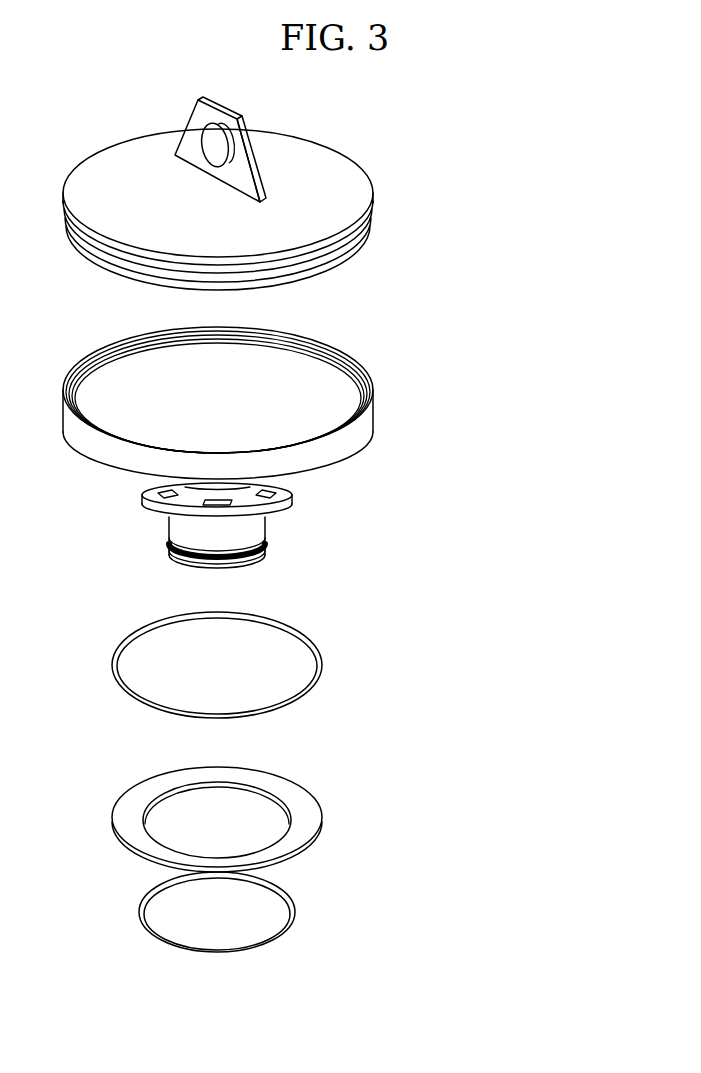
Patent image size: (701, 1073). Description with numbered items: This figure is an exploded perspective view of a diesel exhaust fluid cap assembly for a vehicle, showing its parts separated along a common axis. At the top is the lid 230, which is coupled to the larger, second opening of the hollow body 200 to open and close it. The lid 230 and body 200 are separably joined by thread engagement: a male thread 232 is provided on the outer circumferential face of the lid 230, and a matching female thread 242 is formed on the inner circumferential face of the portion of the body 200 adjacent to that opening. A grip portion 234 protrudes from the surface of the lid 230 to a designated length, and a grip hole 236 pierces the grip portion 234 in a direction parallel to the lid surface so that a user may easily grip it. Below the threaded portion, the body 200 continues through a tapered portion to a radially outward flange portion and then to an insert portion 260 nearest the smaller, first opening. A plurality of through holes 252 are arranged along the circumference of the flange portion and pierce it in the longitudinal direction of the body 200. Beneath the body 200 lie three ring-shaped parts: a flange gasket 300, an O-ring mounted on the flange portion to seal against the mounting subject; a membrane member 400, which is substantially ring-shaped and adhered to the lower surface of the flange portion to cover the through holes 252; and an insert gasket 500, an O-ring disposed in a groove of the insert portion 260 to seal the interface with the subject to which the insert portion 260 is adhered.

The body 200 is at (535, 97).
The lid 230 is at (294, 190).
The male thread 232 is at (361, 256).
The grip portion 234 is at (167, 146).
The grip hole 236 is at (208, 142).
The female thread 242 is at (345, 350).
The through holes 252 is at (147, 491).
The insert portion 260 is at (251, 525).
The flange gasket 300 is at (355, 643).
The membrane member 400 is at (355, 788).
The insert gasket 500 is at (330, 886).